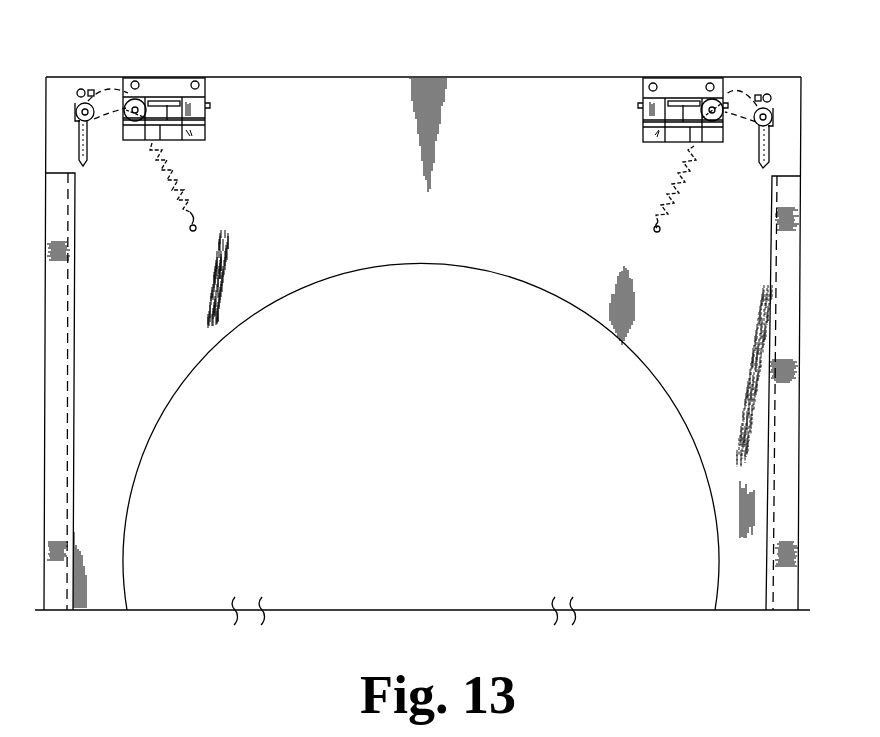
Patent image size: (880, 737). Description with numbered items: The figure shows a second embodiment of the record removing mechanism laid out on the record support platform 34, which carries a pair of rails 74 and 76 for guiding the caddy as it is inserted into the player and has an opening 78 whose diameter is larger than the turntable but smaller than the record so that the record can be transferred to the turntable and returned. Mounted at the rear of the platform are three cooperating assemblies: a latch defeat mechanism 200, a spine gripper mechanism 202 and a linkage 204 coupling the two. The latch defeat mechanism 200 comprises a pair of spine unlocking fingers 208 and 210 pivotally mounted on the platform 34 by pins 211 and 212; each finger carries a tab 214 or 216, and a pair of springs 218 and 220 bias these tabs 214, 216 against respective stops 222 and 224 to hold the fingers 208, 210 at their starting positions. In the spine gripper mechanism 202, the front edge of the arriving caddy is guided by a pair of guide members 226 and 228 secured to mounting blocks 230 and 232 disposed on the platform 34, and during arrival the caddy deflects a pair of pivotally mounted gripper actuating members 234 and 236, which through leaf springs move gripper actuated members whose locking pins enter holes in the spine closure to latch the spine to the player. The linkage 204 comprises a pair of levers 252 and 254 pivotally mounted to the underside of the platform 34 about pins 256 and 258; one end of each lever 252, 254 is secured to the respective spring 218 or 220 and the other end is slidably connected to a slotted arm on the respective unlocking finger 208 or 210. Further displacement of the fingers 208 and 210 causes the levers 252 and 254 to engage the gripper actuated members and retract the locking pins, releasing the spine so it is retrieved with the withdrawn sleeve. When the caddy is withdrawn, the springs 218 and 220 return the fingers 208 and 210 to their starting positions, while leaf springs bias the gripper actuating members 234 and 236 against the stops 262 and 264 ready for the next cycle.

The record support platform 34 is at (108, 609).
The rail 74 is at (73, 506).
The rail 76 is at (777, 545).
The opening 78 is at (132, 504).
The latch defeat mechanism 200 is at (426, 143).
The spine gripper mechanism 202 is at (250, 88).
The linkage 204 is at (422, 163).
The spine unlocking finger 208 is at (79, 162).
The spine unlocking finger 210 is at (766, 165).
The pin 211 is at (76, 104).
The pin 212 is at (772, 118).
The tab 214 is at (88, 100).
The tab 216 is at (762, 106).
The spring 218 is at (190, 203).
The spring 220 is at (652, 213).
The stop 222 is at (79, 88).
The stop 224 is at (767, 94).
The guide member 226 is at (202, 110).
The guide member 228 is at (660, 111).
The mounting block 230 is at (196, 81).
The mounting block 232 is at (694, 84).
The gripper actuating member 234 is at (158, 100).
The gripper actuating member 236 is at (677, 102).
The lever 252 is at (153, 141).
The lever 254 is at (694, 147).
The pin 256 is at (138, 113).
The pin 258 is at (711, 114).
The stop 262 is at (206, 121).
The stop 264 is at (643, 125).